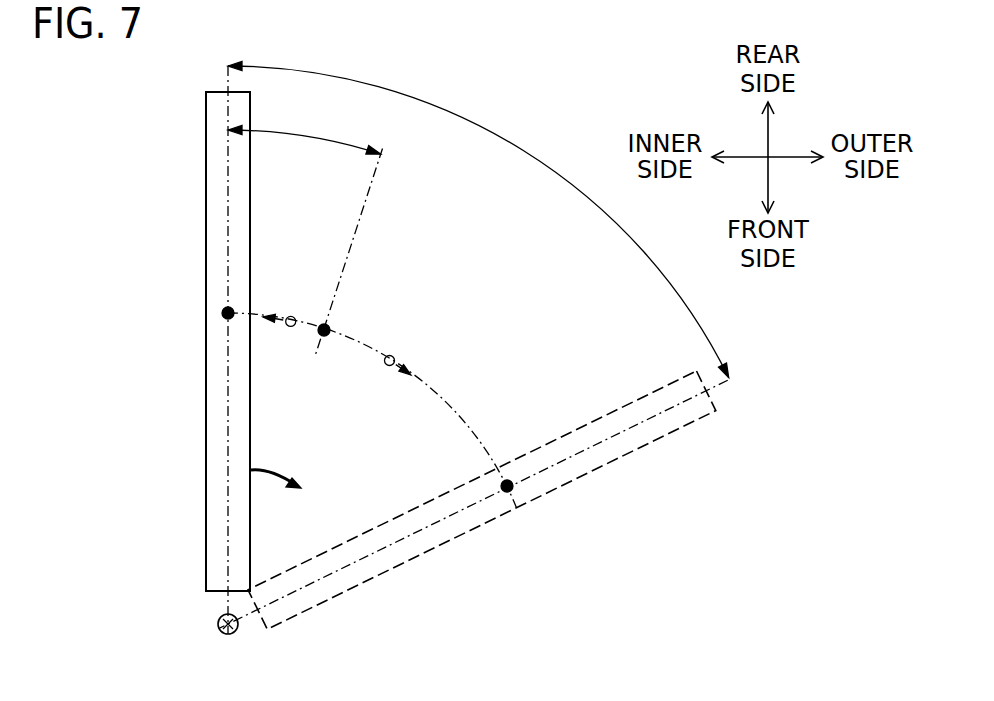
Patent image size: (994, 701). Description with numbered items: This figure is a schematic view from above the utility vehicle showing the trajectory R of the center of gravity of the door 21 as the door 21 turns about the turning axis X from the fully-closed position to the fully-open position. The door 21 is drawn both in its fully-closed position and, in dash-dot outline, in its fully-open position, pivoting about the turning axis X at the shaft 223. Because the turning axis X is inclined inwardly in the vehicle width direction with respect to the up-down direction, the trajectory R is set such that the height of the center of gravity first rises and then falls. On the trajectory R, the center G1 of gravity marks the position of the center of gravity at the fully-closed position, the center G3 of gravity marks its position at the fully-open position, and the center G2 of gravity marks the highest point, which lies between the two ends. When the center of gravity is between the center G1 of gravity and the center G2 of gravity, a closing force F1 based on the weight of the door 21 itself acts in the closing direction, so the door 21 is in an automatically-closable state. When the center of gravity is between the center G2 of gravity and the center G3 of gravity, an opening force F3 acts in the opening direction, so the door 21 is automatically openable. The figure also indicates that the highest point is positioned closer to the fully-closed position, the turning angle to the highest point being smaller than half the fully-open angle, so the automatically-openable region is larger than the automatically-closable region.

The door 21 is at (206, 153).
The shaft 223 is at (219, 617).
The turning axis X is at (214, 628).
The center of gravity at fully-closed position G1 is at (226, 311).
The center of gravity at highest point G2 is at (328, 326).
The center of gravity at fully-open position G3 is at (511, 489).
The closing force F1 is at (266, 323).
The opening force F3 is at (405, 380).
The trajectory of the center of gravity R is at (463, 422).